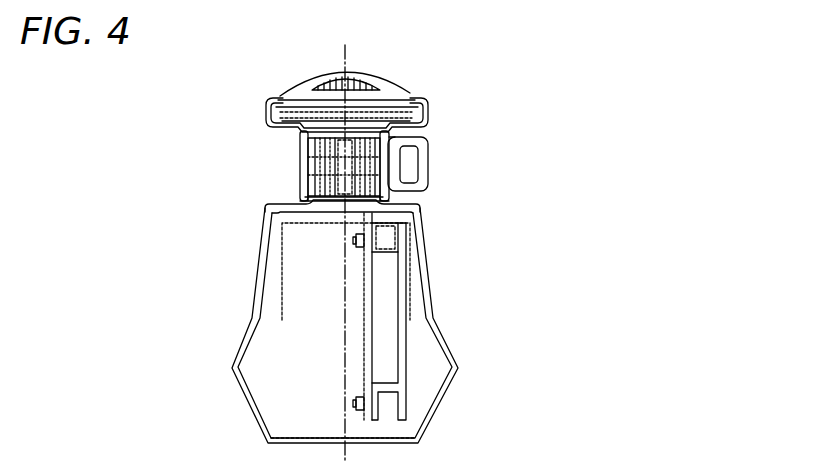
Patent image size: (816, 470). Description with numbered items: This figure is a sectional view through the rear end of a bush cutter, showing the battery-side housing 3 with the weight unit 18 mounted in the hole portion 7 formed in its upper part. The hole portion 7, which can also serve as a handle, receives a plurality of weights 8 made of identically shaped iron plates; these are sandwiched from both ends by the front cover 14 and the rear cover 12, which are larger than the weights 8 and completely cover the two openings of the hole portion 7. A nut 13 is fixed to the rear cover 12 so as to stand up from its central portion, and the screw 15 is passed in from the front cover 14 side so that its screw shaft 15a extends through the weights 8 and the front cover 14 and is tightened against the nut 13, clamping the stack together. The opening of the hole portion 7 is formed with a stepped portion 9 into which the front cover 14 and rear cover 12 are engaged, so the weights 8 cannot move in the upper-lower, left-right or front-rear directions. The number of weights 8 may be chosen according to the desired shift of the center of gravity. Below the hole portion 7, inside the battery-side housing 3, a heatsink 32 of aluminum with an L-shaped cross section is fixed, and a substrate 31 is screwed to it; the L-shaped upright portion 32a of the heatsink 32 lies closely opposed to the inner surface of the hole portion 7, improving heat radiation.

The battery-side housing 3 is at (432, 293).
The hole portion 7 is at (330, 198).
The weights 8 is at (318, 198).
The stepped portion 9 is at (303, 139).
The rear cover 12 is at (303, 187).
The nut 13 is at (312, 148).
The front cover 14 is at (382, 201).
The screw 15 is at (408, 164).
The screw shaft 15a is at (380, 135).
The weight unit 18 is at (293, 158).
The substrate 31 is at (368, 353).
The heatsink 32 is at (407, 342).
The L-shaped upright portion 32a is at (390, 216).